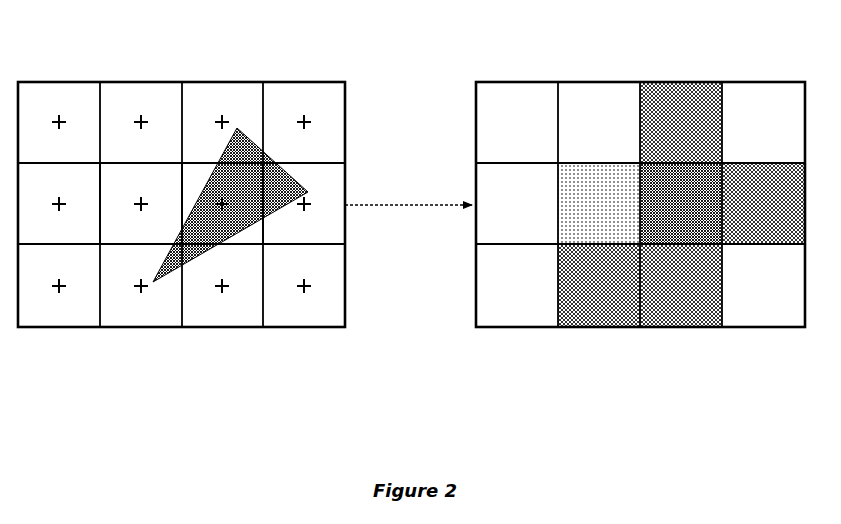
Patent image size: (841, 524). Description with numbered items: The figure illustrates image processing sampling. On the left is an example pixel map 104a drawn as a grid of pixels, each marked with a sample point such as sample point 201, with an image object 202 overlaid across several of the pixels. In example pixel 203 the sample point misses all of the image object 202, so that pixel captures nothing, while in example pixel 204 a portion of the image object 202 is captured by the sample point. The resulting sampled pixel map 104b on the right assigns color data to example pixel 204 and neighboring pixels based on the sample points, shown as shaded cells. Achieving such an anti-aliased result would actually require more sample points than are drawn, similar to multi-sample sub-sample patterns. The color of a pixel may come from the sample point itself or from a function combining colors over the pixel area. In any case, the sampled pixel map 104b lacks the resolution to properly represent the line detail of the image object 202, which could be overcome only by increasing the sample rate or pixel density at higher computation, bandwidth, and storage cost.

The pixel map 104a is at (87, 349).
The sampled pixel map 104b is at (556, 340).
The sample point 201 is at (58, 110).
The image object 202 is at (253, 228).
The example pixel 203 is at (125, 178).
The example pixel 204 is at (197, 184).